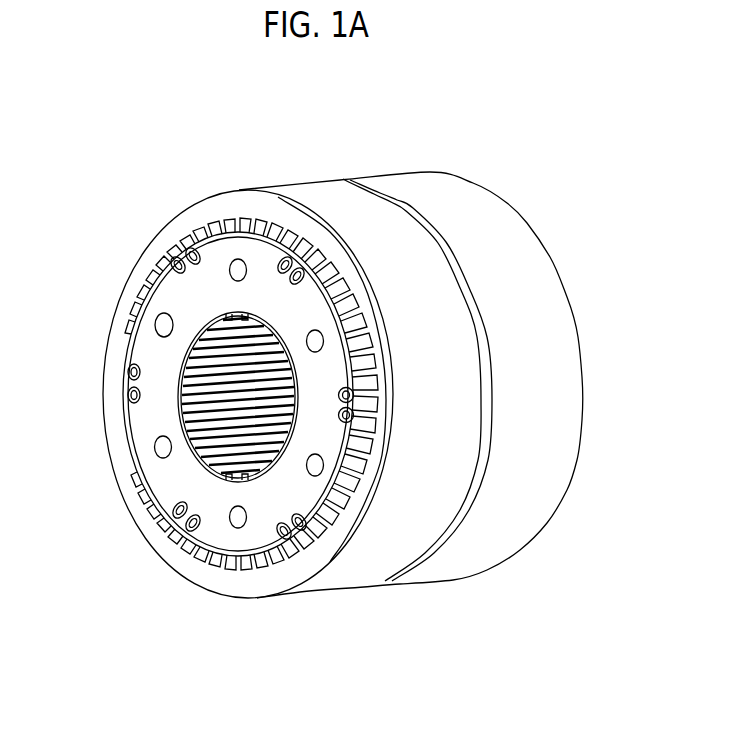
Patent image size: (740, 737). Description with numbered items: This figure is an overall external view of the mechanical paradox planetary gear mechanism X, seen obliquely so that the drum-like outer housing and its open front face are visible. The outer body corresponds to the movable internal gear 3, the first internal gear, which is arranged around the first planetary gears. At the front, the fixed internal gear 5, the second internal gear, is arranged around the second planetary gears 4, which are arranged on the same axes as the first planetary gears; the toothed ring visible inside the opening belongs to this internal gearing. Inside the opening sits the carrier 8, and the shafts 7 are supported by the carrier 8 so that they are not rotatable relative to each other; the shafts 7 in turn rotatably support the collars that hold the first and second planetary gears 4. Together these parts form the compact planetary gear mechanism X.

The mechanical paradox planetary gear mechanism X is at (193, 166).
The movable internal gear 3 is at (443, 582).
The second planetary gears 4 is at (250, 317).
The fixed internal gear 5 is at (357, 584).
The shafts 7 is at (237, 259).
The carrier 8 is at (168, 488).